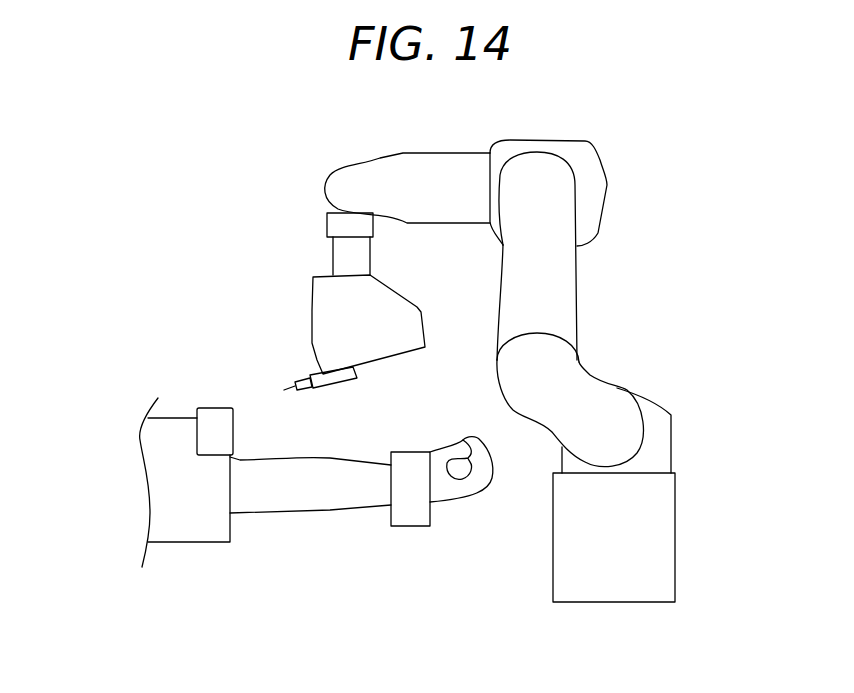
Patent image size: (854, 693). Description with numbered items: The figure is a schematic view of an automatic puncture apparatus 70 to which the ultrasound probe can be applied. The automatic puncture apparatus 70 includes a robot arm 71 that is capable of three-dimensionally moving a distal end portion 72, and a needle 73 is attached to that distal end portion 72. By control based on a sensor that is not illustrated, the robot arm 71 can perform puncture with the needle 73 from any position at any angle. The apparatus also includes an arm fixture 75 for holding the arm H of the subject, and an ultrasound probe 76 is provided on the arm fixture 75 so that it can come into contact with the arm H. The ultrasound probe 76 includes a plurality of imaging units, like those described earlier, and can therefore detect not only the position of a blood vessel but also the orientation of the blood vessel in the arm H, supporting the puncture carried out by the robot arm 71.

The automatic puncture apparatus 70 is at (527, 355).
The robot arm 71 is at (577, 283).
The distal end portion 72 is at (312, 302).
The needle 73 is at (284, 390).
The arm fixture 75 is at (158, 400).
The ultrasound probe 76 is at (201, 405).
The arm H is at (308, 513).